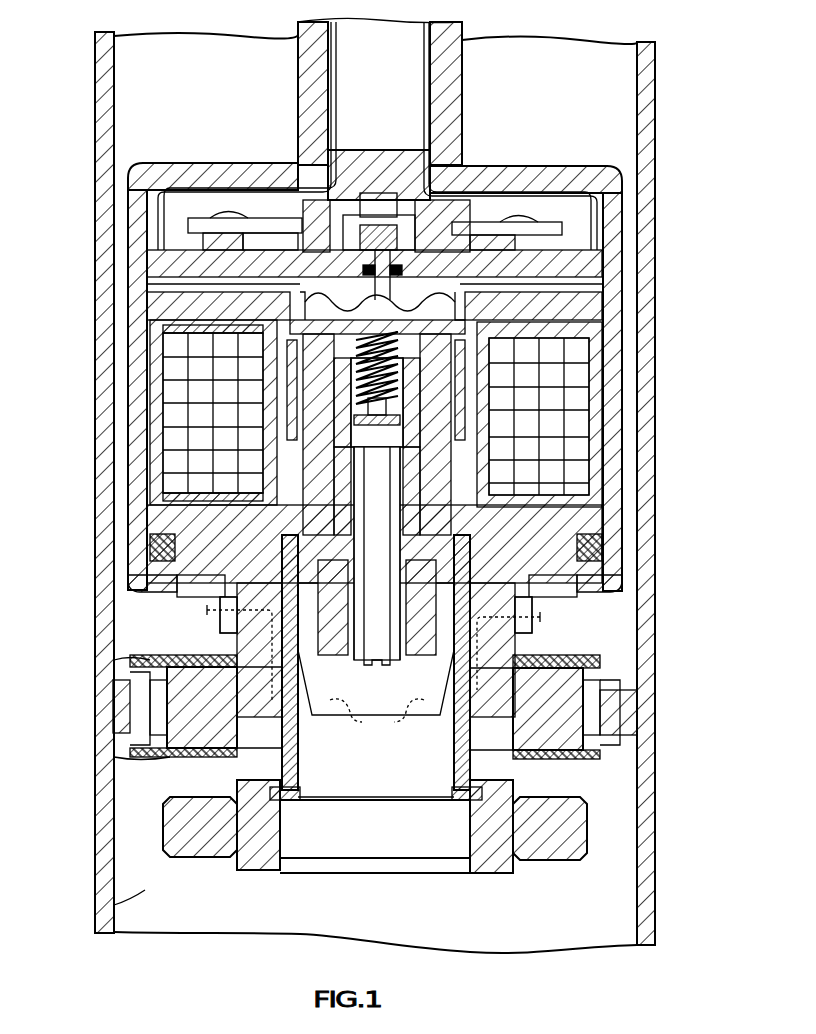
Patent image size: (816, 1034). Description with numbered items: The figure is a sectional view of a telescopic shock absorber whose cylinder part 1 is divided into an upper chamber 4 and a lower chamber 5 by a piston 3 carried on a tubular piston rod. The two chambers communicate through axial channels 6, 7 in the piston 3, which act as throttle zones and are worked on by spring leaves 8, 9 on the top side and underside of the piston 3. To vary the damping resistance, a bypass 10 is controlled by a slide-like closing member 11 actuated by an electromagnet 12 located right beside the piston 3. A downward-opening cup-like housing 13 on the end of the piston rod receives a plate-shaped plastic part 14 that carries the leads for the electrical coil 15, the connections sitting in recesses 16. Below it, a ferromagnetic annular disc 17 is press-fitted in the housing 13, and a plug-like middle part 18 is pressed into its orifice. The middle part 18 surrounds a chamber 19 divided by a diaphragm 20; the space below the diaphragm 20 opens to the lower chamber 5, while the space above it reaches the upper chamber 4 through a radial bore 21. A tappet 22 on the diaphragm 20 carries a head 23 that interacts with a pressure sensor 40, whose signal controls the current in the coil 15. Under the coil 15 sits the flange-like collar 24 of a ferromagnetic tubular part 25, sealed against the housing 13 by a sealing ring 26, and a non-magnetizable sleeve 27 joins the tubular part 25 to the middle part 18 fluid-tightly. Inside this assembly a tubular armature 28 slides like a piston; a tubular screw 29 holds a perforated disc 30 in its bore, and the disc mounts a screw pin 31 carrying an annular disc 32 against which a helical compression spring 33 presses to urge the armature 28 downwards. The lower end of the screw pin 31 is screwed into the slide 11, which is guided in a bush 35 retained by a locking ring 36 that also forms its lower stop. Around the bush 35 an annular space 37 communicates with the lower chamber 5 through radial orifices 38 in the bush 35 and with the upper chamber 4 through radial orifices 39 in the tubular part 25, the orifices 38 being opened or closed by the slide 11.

The cylinder part 1 is at (108, 96).
The piston 3 is at (150, 730).
The chamber 4 is at (130, 60).
The chamber 5 is at (140, 905).
The axial channel 6 is at (590, 690).
The axial channel 7 is at (120, 700).
The spring leaf 8 is at (190, 760).
The spring leaf 9 is at (170, 752).
The bypass 10 is at (408, 725).
The closing member 11 is at (150, 540).
The electromagnet 12 is at (150, 460).
The cup-like housing 13 is at (600, 170).
The plastic part 14 is at (470, 165).
The electrical coil 15 is at (195, 400).
The recesses 16 is at (215, 205).
The annular disc 17 is at (590, 300).
The middle part 18 is at (470, 322).
The chamber 19 is at (160, 330).
The diaphragm 20 is at (540, 270).
The radial bore 21 is at (160, 284).
The tappet 22 is at (386, 298).
The head 23 is at (160, 260).
The collar 24 is at (150, 582).
The tubular part 25 is at (480, 515).
The sealing ring 26 is at (600, 548).
The sleeve 27 is at (175, 390).
The armature 28 is at (520, 490).
The tubular screw 29 is at (560, 385).
The perforated disc 30 is at (450, 450).
The screw pin 31 is at (360, 625).
The annular disc 32 is at (430, 405).
The helical compression spring 33 is at (230, 430).
The bush 35 is at (560, 592).
The locking ring 36 is at (560, 800).
The annular space 37 is at (560, 720).
The radial orifices 38 is at (305, 700).
The radial orifices 39 is at (207, 610).
The pressure sensor 40 is at (160, 205).